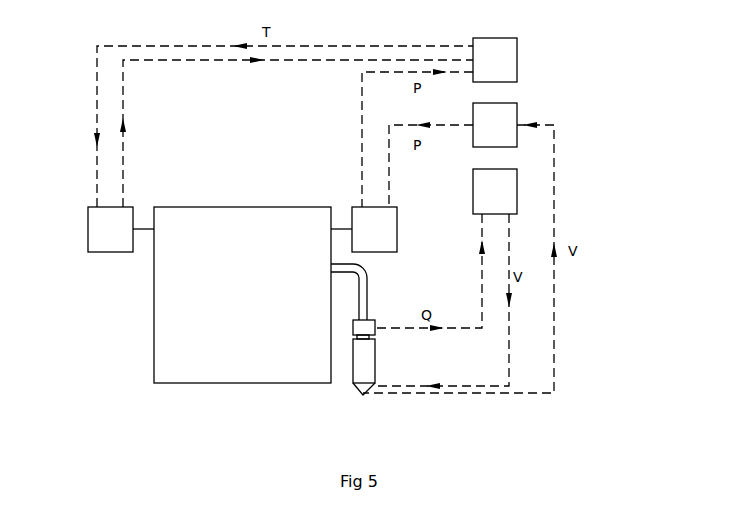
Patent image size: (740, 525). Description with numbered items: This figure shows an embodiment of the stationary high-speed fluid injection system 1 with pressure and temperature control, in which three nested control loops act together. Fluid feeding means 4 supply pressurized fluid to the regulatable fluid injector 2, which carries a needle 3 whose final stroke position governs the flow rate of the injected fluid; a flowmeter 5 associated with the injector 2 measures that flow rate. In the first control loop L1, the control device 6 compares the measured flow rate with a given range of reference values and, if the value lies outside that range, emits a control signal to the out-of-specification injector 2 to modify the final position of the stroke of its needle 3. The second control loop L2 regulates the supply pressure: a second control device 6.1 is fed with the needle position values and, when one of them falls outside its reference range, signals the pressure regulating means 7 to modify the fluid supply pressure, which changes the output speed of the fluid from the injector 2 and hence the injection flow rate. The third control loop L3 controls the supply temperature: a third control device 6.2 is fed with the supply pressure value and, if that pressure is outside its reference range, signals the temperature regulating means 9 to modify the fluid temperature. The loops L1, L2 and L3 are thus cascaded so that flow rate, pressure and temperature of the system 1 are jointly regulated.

The system 1 is at (83, 38).
The fluid injector 2 is at (370, 357).
The needle 3 is at (363, 387).
The fluid feeding means 4 is at (257, 217).
The flowmeter 5 is at (370, 328).
The control device 6 is at (495, 191).
The second control device 6.1 is at (495, 125).
The third control device 6.2 is at (495, 60).
The pressure regulating means 7 is at (374, 229).
The temperature regulating means 9 is at (110, 229).
The first control loop L1 is at (442, 300).
The second control loop L2 is at (431, 153).
The third control loop L3 is at (285, 110).